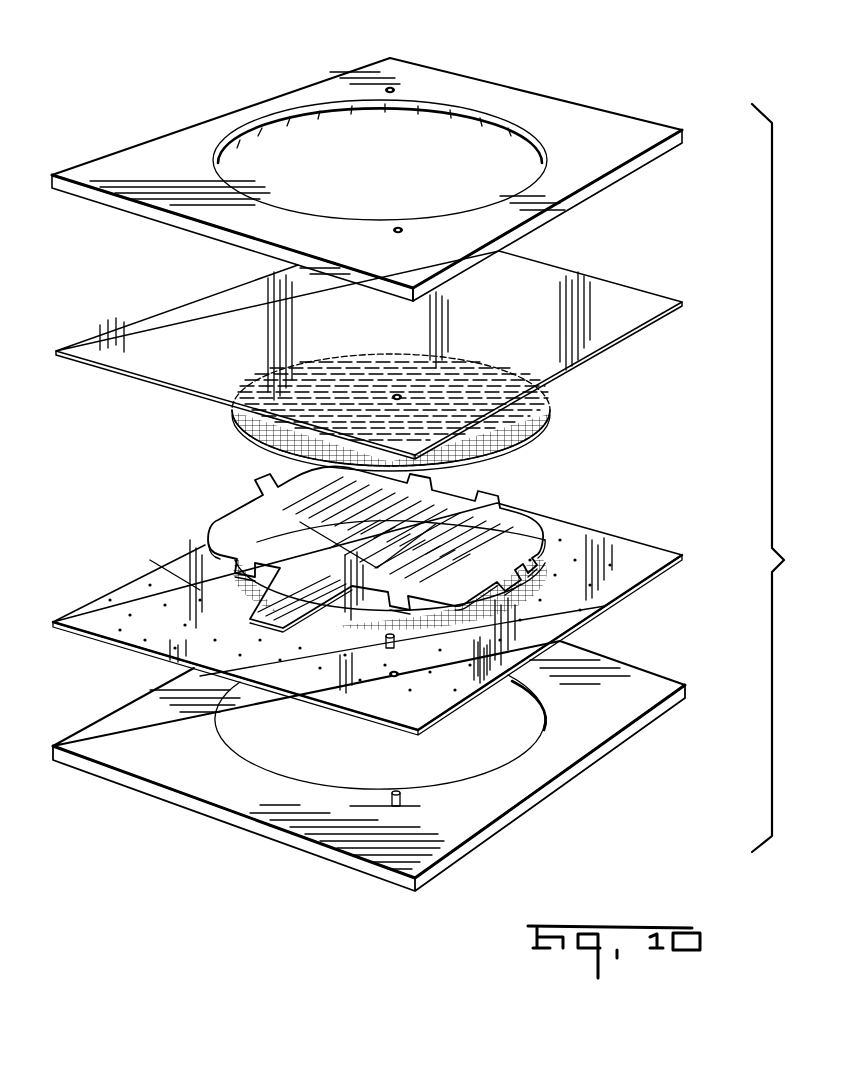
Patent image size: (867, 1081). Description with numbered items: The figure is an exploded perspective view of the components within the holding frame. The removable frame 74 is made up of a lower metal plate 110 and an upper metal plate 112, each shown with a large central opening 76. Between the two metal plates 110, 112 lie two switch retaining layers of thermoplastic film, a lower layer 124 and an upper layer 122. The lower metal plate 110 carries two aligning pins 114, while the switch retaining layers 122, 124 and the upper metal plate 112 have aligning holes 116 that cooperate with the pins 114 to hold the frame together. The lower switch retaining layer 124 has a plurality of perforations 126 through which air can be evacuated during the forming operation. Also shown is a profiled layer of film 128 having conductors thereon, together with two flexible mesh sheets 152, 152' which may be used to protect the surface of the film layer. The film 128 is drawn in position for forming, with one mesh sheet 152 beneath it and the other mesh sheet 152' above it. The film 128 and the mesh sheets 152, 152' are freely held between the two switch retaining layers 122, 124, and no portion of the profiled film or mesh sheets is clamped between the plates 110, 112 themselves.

The removable frame 74 is at (233, 88).
The circular opening 76 is at (487, 124).
The lower metal plate 110 is at (500, 800).
The upper metal plate 112 is at (578, 110).
The aligning pins 114 is at (386, 644).
The aligning holes 116 is at (388, 88).
The upper switch retaining layer 122 is at (535, 272).
The lower switch retaining layer 124 is at (585, 545).
The perforations 126 is at (203, 577).
The profiled layer of film 128 is at (510, 513).
The flexible mesh sheet 152 is at (432, 612).
The flexible mesh sheet 152' is at (425, 412).